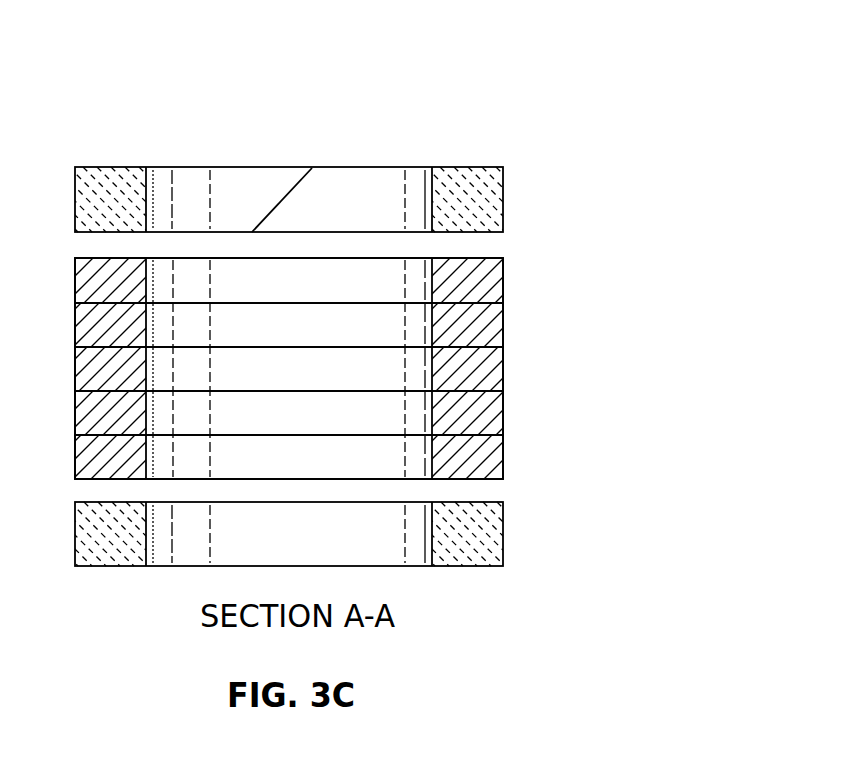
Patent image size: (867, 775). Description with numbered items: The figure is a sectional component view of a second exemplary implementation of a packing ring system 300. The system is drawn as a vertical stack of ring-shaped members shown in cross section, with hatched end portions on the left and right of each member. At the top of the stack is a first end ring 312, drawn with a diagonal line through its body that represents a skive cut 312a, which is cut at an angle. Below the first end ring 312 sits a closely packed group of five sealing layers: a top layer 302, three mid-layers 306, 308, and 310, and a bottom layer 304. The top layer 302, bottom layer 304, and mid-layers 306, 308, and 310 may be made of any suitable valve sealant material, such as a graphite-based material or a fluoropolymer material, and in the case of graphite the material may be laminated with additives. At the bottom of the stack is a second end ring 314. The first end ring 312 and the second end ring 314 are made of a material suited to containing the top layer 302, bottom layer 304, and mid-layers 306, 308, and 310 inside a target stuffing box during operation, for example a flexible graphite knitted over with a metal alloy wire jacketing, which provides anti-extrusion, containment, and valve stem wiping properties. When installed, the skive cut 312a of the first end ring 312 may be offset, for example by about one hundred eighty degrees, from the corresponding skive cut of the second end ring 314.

The packing ring system 300 is at (510, 85).
The first end ring 312 is at (503, 203).
The skive cut 312a is at (278, 200).
The top layer 302 is at (503, 278).
The mid-layer 306 is at (503, 325).
The mid-layer 308 is at (503, 368).
The mid-layer 310 is at (503, 413).
The bottom layer 304 is at (503, 457).
The second end ring 314 is at (503, 534).